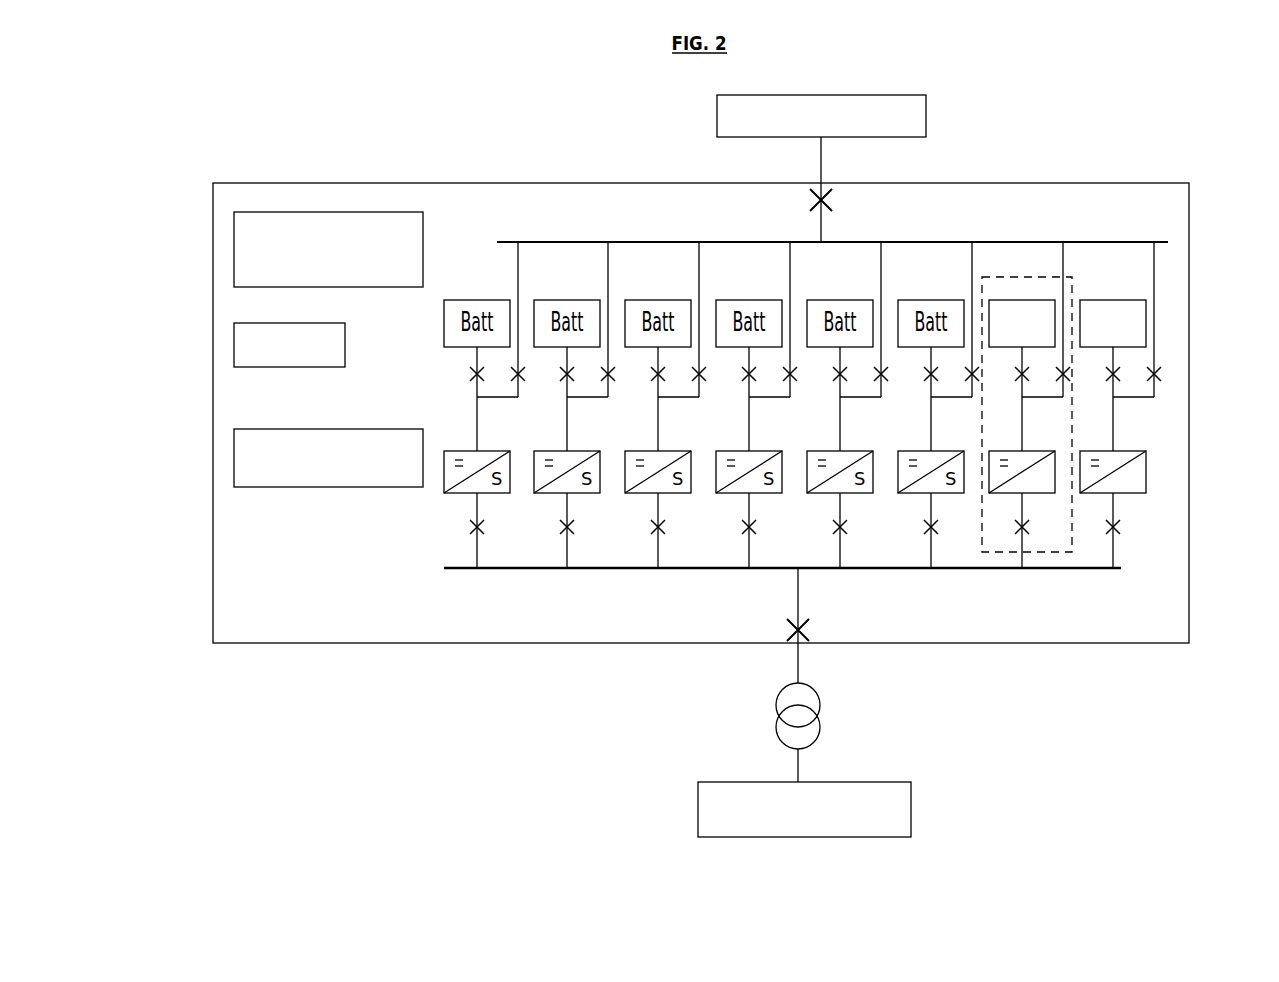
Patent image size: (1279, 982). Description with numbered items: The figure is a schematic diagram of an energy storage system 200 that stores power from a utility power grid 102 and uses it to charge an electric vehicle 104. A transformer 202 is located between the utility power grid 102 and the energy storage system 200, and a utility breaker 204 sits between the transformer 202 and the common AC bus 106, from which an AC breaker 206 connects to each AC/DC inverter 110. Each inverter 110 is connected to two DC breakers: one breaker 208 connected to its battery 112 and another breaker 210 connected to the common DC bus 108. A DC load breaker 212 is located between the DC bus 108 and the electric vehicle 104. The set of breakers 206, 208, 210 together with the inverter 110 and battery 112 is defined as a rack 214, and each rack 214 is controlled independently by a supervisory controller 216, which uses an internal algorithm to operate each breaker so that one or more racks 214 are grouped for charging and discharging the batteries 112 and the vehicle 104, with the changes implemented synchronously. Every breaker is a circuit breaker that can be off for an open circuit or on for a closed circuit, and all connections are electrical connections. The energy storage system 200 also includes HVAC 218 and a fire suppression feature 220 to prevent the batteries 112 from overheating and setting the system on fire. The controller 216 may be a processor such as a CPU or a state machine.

The utility power grid 102 is at (911, 803).
The electric vehicle 104 is at (926, 112).
The common AC bus 106 is at (980, 570).
The common DC bus 108 is at (660, 242).
The AC/DC inverter 110 is at (1146, 472).
The battery 112 is at (1146, 323).
The energy storage system 200 is at (452, 183).
The transformer 202 is at (782, 720).
The utility breaker 204 is at (806, 628).
The AC breaker 206 is at (1120, 528).
The DC breaker 208 is at (1118, 375).
The DC breaker 210 is at (1160, 372).
The DC load breaker 212 is at (828, 205).
The rack 214 is at (1030, 277).
The supervisory controller 216 is at (330, 212).
The HVAC 218 is at (234, 342).
The fire suppression feature 220 is at (234, 455).